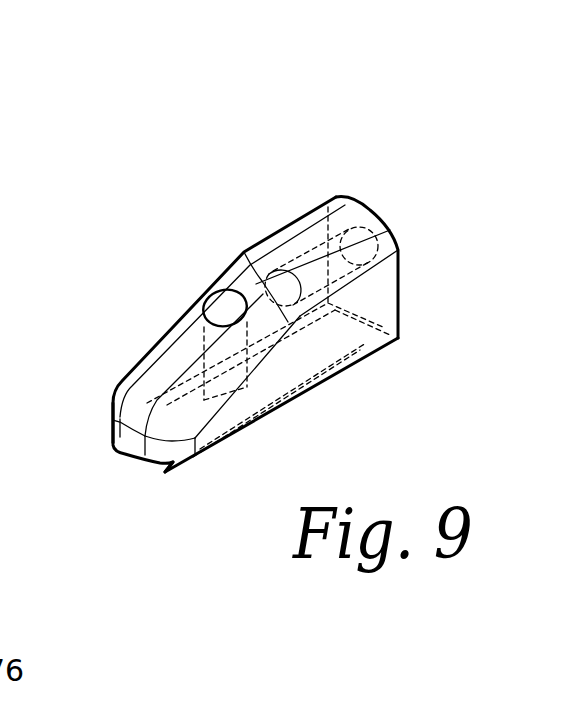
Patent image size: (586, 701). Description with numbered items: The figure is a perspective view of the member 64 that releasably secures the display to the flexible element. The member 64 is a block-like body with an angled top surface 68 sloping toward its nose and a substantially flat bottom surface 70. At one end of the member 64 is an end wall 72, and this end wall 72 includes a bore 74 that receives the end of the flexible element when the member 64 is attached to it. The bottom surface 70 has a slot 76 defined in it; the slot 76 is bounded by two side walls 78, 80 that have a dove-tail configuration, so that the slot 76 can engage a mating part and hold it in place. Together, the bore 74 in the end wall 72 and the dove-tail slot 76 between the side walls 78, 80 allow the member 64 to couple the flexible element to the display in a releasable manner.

The member 64 is at (343, 175).
The angled top surface 68 is at (182, 365).
The bottom surface 70 is at (349, 372).
The end wall 72 is at (404, 298).
The bore 74 is at (363, 243).
The slot 76 is at (134, 466).
The side wall 78 is at (117, 463).
The side wall 80 is at (163, 468).